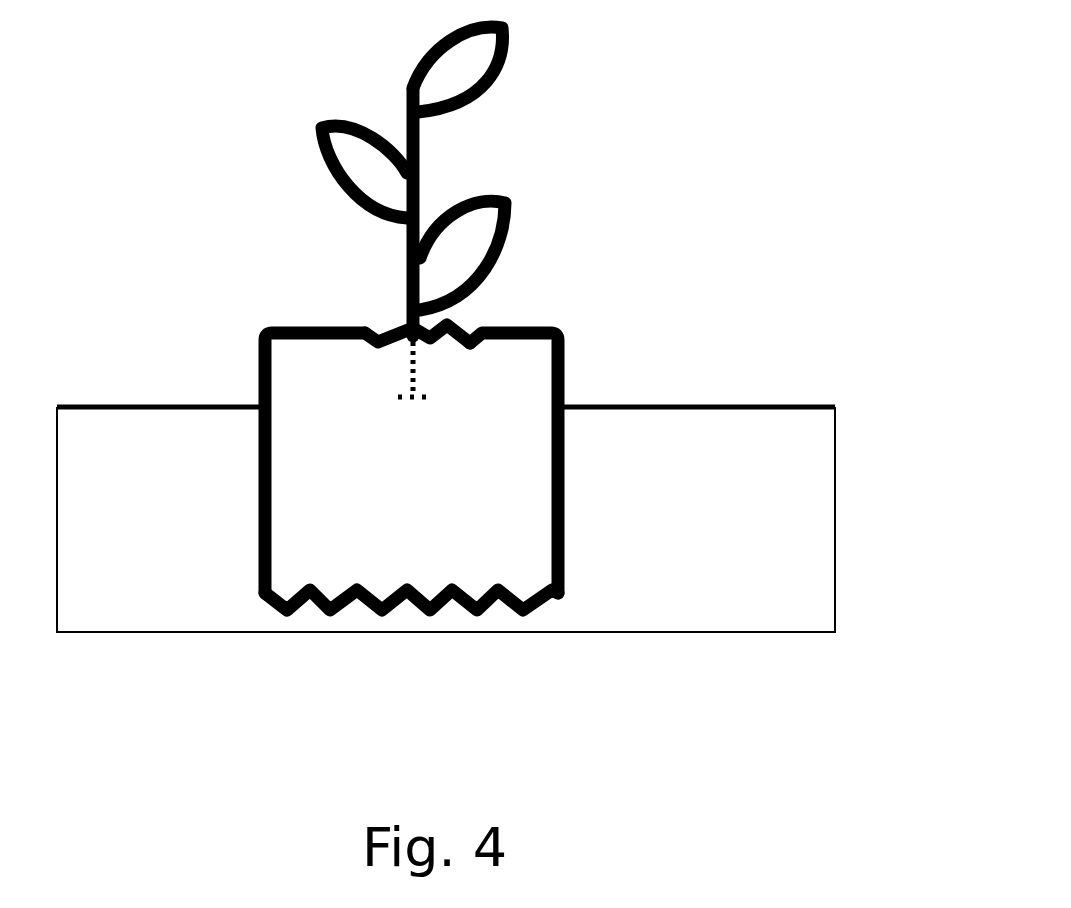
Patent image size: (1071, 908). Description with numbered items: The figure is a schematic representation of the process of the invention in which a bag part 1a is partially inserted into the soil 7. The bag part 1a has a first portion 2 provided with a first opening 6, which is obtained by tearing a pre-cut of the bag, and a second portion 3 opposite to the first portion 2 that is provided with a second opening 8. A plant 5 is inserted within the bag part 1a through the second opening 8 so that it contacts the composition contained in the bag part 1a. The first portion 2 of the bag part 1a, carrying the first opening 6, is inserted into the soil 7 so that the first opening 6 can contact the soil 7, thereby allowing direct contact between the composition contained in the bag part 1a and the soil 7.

The bag part 1a is at (492, 482).
The first portion 2 is at (315, 548).
The second portion 3 is at (374, 482).
The plant 5 is at (420, 175).
The first opening 6 is at (408, 603).
The soil 7 is at (817, 532).
The second opening 8 is at (463, 330).